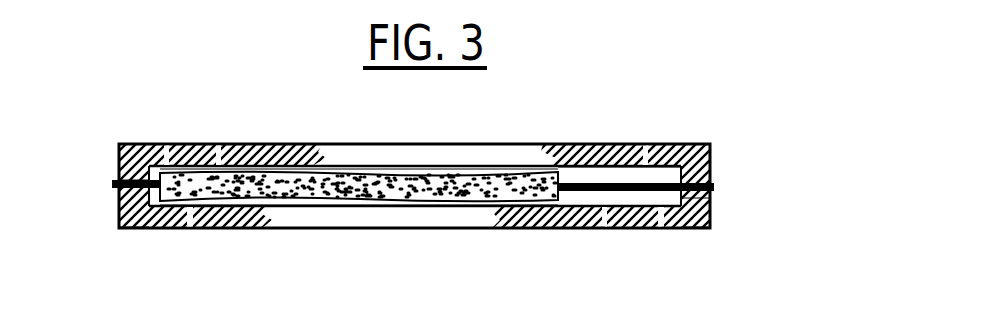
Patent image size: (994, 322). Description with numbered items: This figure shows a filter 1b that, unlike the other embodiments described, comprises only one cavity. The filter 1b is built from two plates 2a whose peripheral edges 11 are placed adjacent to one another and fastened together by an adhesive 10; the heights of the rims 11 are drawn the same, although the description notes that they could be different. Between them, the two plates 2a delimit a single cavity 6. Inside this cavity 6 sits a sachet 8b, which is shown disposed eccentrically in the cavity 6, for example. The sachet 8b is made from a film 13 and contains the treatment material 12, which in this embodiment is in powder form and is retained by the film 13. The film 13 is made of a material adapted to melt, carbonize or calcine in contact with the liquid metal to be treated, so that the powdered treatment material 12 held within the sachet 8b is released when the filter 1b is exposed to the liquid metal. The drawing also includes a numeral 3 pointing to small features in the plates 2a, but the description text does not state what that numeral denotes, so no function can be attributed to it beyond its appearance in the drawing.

The filter 1b is at (732, 148).
The plate 2a is at (120, 168).
The groove 3 is at (219, 146).
The cavity 6 is at (610, 178).
The sachet 8b is at (452, 203).
The adhesive 10 is at (120, 182).
The peripheral edge 11 is at (137, 228).
The treatment material 12 is at (321, 186).
The film 13 is at (422, 170).